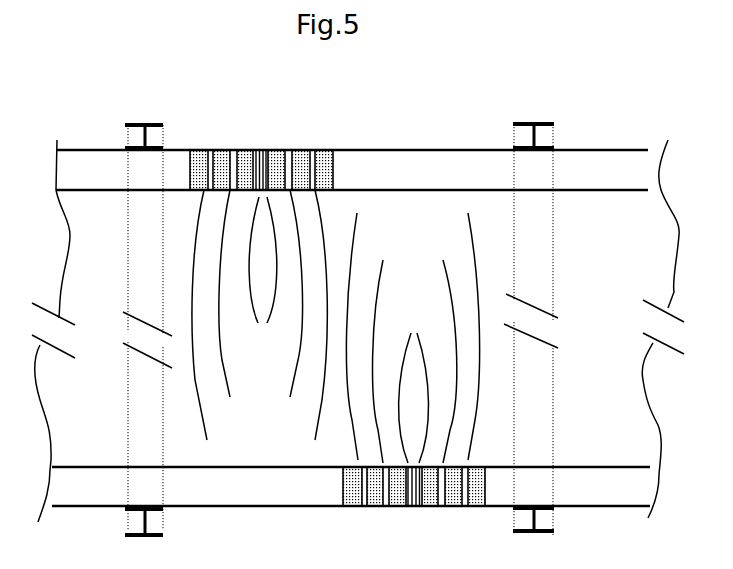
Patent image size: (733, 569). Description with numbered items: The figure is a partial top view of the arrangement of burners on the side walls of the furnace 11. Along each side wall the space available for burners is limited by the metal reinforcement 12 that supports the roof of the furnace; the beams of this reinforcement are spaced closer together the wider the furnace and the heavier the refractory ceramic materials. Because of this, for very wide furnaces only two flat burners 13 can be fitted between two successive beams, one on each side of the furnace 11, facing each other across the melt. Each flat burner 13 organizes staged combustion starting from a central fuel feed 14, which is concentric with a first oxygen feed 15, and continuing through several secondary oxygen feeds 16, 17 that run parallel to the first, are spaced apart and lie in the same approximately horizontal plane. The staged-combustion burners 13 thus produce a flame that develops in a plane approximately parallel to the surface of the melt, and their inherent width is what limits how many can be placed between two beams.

The furnace 11 is at (432, 160).
The metal reinforcement 12 is at (154, 125).
The flat burner 13 is at (337, 328).
The central fuel feed 14 is at (415, 507).
The first oxygen feed 15 is at (419, 507).
The secondary oxygen feed 16 is at (287, 150).
The secondary oxygen feed 17 is at (312, 150).